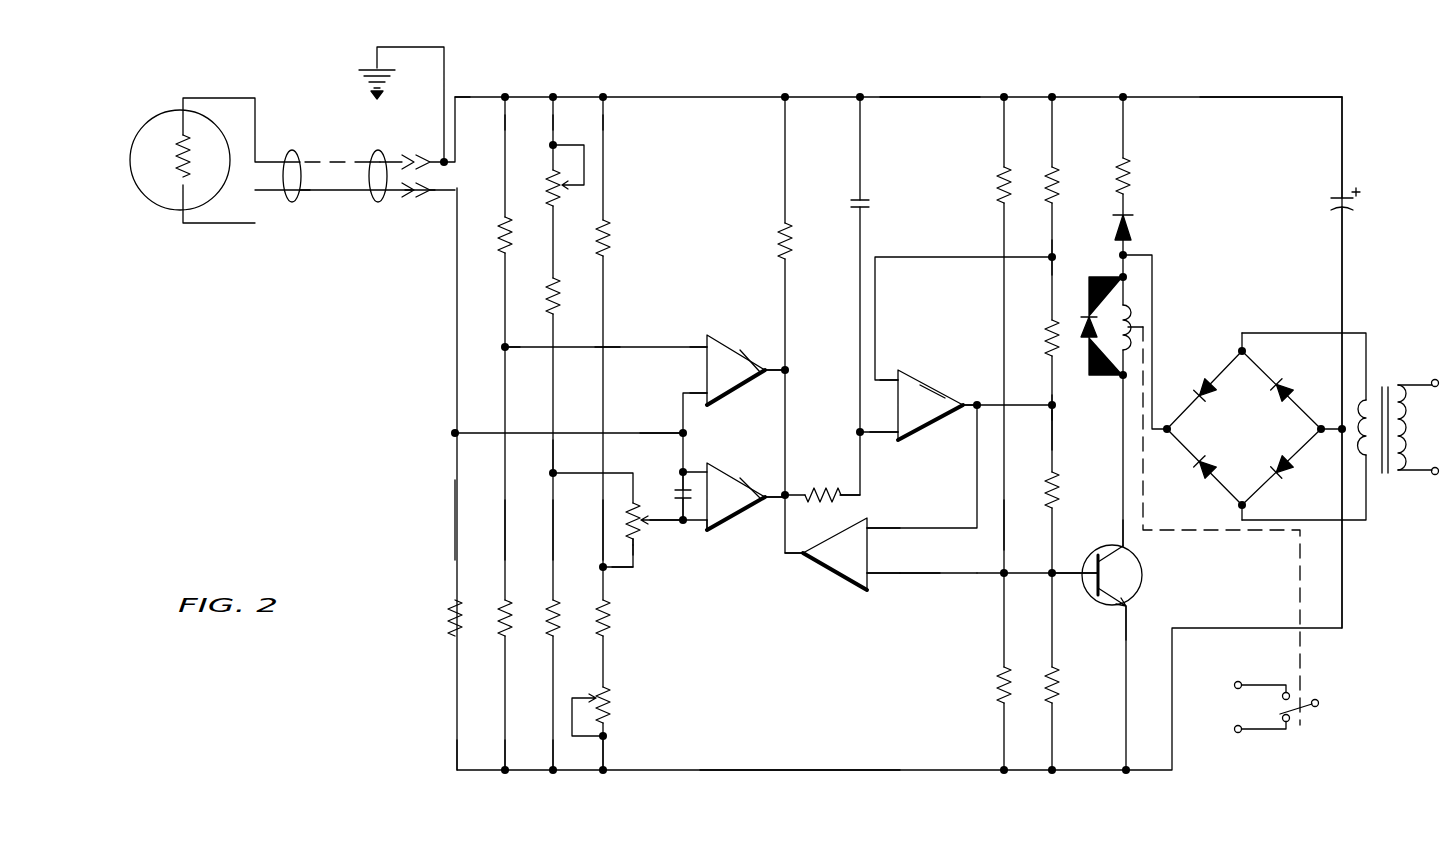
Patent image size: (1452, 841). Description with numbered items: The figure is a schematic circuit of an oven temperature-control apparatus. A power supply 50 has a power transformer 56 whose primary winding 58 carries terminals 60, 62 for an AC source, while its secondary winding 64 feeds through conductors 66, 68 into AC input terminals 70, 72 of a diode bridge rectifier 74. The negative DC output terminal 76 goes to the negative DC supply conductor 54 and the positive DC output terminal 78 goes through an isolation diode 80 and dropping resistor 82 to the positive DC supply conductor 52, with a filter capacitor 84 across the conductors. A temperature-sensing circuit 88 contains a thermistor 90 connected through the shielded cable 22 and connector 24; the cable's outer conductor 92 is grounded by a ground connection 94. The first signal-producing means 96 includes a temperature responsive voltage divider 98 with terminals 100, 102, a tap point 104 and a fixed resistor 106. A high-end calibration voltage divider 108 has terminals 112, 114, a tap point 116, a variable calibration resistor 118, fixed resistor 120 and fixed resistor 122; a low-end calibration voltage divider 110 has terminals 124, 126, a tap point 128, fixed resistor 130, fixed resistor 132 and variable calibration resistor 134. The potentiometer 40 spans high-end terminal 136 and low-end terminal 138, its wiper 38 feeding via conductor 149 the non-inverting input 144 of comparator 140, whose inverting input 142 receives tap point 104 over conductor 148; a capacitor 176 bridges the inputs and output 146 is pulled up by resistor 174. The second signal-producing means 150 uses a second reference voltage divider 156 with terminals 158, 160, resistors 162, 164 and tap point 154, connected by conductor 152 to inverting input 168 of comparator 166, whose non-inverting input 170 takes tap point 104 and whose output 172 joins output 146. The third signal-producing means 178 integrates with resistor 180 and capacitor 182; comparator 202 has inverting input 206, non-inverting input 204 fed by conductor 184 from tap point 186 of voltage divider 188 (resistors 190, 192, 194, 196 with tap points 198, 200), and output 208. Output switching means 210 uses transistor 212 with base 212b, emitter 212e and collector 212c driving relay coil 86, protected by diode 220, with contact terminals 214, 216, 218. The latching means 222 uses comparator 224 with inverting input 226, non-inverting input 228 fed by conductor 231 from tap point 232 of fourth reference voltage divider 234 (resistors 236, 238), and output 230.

The temperature-sensing circuit 88 is at (243, 54).
The thermistor 90 is at (160, 118).
The outer conductor 92 is at (372, 160).
The shielded cable 22 is at (333, 229).
The connector 24 is at (422, 216).
The ground connection 94 is at (372, 68).
The terminal 100 is at (456, 97).
The terminal 158 is at (505, 121).
The terminal 112 is at (553, 121).
The terminal 124 is at (603, 121).
The variable calibration resistor 118 is at (550, 182).
The resistor 162 is at (503, 217).
The fixed resistor 120 is at (551, 284).
The fixed resistor 130 is at (606, 254).
The pull-up resistor 174 is at (783, 224).
The second signal-producing means 150 is at (682, 301).
The conductor 152 is at (612, 345).
The tap point 154 is at (504, 348).
The inverting input 168 is at (690, 347).
The comparator 166 is at (748, 358).
The non-inverting input 170 is at (690, 393).
The output 172 is at (776, 371).
The conductor 148 is at (662, 428).
The intermediate tap point 104 is at (455, 433).
The inverting input 142 is at (692, 470).
The first signal-producing means 96 is at (644, 479).
The comparator 140 is at (748, 484).
The high-end terminal 136 is at (636, 473).
The intermediate tap point 116 is at (532, 456).
The capacitor 176 is at (678, 494).
The output 146 is at (778, 500).
The non-inverting input 144 is at (715, 532).
The conductor 149 is at (680, 522).
The intermediate tap point 128 is at (603, 567).
The low-end terminal 138 is at (618, 570).
The movable wiper 38 is at (645, 560).
The linear temperature-presetting potentiometer 40 is at (650, 566).
The second reference voltage divider 156 is at (465, 531).
The high-end calibration voltage divider 108 is at (513, 531).
The low-end calibration voltage divider 110 is at (562, 516).
The temperature responsive voltage divider 98 is at (407, 534).
The fixed resistor 106 is at (453, 606).
The resistor 164 is at (503, 603).
The fixed resistor 122 is at (552, 633).
The fixed resistor 132 is at (607, 630).
The variable calibration resistor 134 is at (607, 693).
The terminal 126 is at (610, 752).
The terminal 102 is at (455, 752).
The terminal 160 is at (505, 752).
The terminal 114 is at (553, 752).
The negative DC supply conductor 54 is at (820, 768).
The positive DC supply conductor 52 is at (925, 96).
The capacitor 182 is at (865, 200).
The conductor 184 is at (912, 255).
The third signal-producing means 178 is at (913, 316).
The non-inverting input 204 is at (890, 378).
The comparator 202 is at (935, 392).
The inverting input 206 is at (883, 434).
The output 208 is at (968, 408).
The resistor 180 is at (838, 492).
The tap point 186 is at (1050, 257).
The fixed resistor 192 is at (1050, 322).
The voltage divider 188 is at (1070, 416).
The tap point 198 is at (1051, 410).
The fixed resistor 194 is at (1056, 490).
The fourth reference voltage divider 234 is at (1015, 529).
The tap point 200 is at (1050, 573).
The tap point 232 is at (1003, 573).
The fixed resistor 236 is at (1002, 168).
The fixed resistor 190 is at (1050, 168).
The fixed resistor 238 is at (1002, 688).
The fixed resistor 196 is at (1055, 685).
The latching means 222 is at (825, 636).
The inverting input 226 is at (880, 528).
The non-inverting input 228 is at (880, 573).
The conductor 231 is at (918, 577).
The output 230 is at (793, 553).
The comparator 224 is at (843, 576).
The power supply 50 is at (1216, 226).
The dropping resistor 82 is at (1126, 180).
The isolation diode 80 is at (1132, 232).
The filter capacitor 84 is at (1332, 203).
The diode 220 is at (1080, 312).
The relay coil 86 is at (1118, 318).
The output switching means 210 is at (1203, 601).
The diode bridge rectifier 74 is at (1228, 436).
The AC input terminal 70 is at (1240, 350).
The AC input terminal 72 is at (1242, 509).
The positive DC output terminal 78 is at (1168, 428).
The negative DC output terminal 76 is at (1322, 428).
The conductor 66 is at (1300, 336).
The conductor 68 is at (1322, 520).
The secondary winding 64 is at (1355, 440).
The power transformer 56 is at (1394, 365).
The primary winding 58 is at (1402, 425).
The terminal 60 is at (1435, 378).
The terminal 62 is at (1433, 477).
The NPN amplifying transistor 212 is at (1145, 578).
The base 212b is at (1095, 568).
The collector 212c is at (1126, 550).
The emitter 212e is at (1128, 606).
The common contact terminal 214 is at (1318, 703).
The normally-open contact terminal 218 is at (1234, 686).
The normally-closed contact terminal 216 is at (1234, 730).